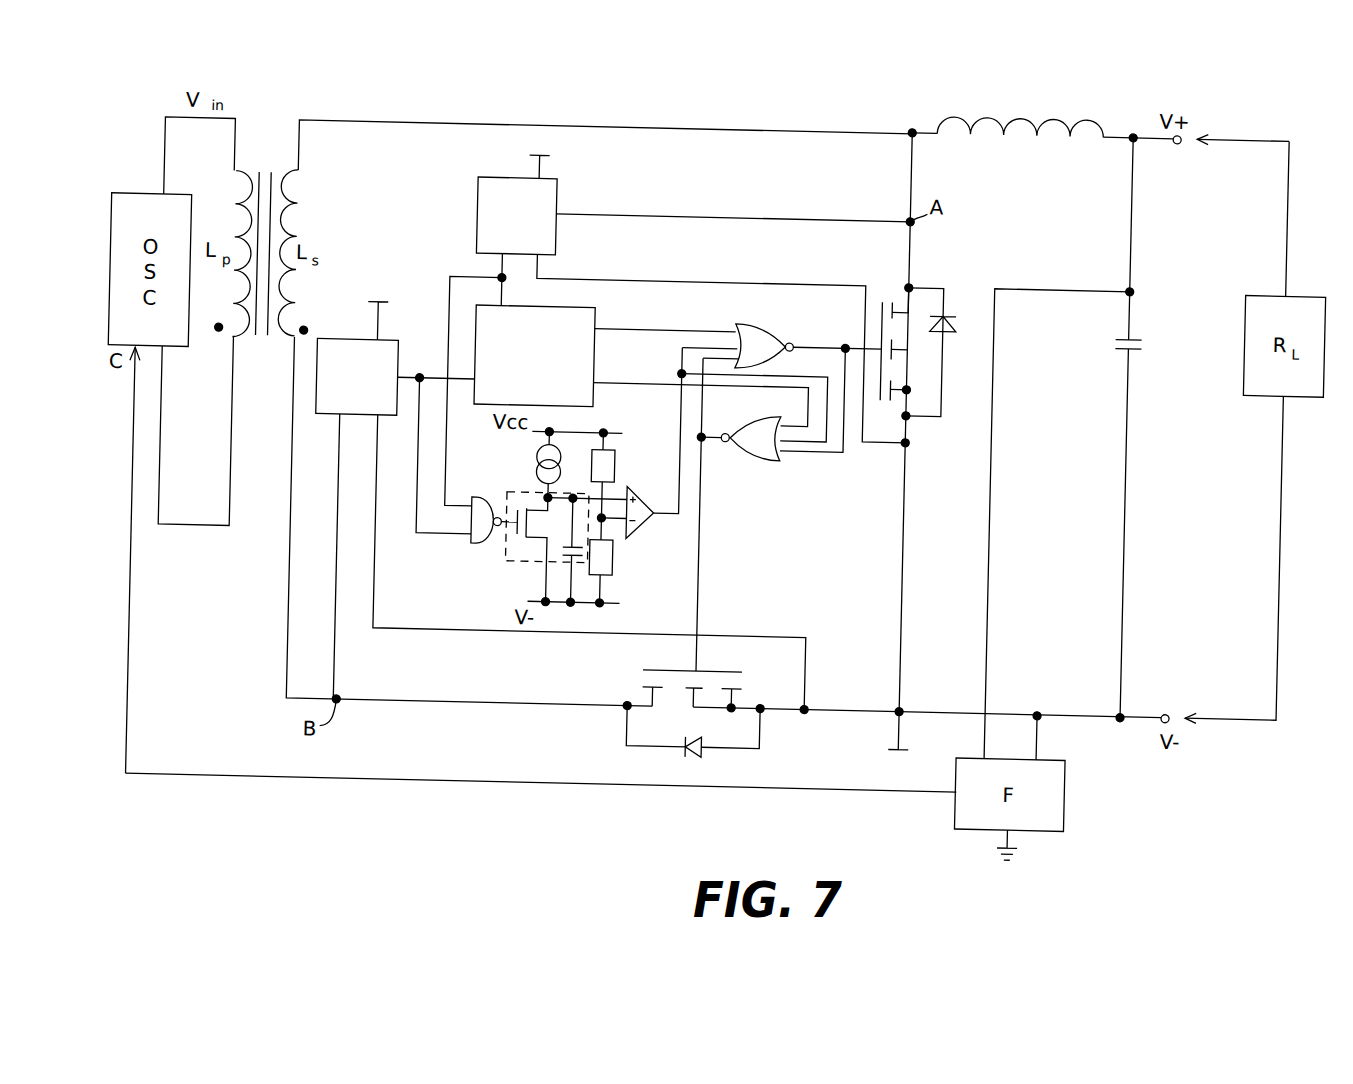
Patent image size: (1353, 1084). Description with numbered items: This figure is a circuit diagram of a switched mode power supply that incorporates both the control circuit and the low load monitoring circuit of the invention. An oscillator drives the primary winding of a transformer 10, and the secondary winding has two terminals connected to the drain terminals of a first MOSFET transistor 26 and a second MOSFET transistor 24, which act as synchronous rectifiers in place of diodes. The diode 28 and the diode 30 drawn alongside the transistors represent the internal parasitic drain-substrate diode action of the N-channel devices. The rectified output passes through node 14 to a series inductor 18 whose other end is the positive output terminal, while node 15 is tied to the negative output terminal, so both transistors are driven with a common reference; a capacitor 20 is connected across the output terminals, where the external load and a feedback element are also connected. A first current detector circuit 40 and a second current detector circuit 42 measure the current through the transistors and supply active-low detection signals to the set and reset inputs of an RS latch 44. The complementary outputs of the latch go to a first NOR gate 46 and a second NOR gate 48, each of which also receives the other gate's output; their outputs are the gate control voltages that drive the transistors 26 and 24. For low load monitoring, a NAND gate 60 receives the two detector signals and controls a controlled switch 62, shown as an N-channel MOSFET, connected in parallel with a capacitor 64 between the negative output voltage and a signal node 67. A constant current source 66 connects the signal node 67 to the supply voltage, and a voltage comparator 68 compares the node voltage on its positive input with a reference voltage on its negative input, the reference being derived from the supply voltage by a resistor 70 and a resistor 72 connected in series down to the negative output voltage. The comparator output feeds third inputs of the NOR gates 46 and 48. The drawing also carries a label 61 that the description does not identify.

The transformer 10 is at (256, 180).
The node 14 is at (905, 123).
The node 15 is at (903, 710).
The series inductor 18 is at (1089, 112).
The capacitor 20 is at (1140, 340).
The second MOSFET transistor 24 is at (648, 674).
The first MOSFET transistor 26 is at (879, 297).
The diode 28 is at (700, 752).
The diode 30 is at (945, 326).
The first current detector circuit 40 is at (332, 422).
The second current detector circuit 42 is at (472, 186).
The RS latch 44 is at (592, 318).
The first NOR gate 46 is at (738, 320).
The second NOR gate 48 is at (762, 458).
The NAND gate 60 is at (472, 548).
The discharge transistor 61 is at (511, 542).
The controlled switch 62 is at (527, 548).
The capacitor 64 is at (568, 560).
The constant current source 66 is at (537, 458).
The signal node 67 is at (544, 490).
The voltage comparator 68 is at (650, 522).
The resistor 70 is at (615, 467).
The resistor 72 is at (615, 574).